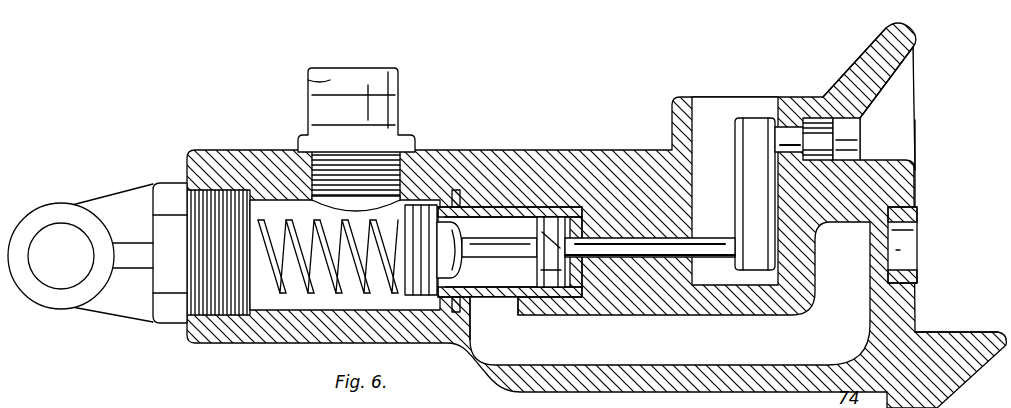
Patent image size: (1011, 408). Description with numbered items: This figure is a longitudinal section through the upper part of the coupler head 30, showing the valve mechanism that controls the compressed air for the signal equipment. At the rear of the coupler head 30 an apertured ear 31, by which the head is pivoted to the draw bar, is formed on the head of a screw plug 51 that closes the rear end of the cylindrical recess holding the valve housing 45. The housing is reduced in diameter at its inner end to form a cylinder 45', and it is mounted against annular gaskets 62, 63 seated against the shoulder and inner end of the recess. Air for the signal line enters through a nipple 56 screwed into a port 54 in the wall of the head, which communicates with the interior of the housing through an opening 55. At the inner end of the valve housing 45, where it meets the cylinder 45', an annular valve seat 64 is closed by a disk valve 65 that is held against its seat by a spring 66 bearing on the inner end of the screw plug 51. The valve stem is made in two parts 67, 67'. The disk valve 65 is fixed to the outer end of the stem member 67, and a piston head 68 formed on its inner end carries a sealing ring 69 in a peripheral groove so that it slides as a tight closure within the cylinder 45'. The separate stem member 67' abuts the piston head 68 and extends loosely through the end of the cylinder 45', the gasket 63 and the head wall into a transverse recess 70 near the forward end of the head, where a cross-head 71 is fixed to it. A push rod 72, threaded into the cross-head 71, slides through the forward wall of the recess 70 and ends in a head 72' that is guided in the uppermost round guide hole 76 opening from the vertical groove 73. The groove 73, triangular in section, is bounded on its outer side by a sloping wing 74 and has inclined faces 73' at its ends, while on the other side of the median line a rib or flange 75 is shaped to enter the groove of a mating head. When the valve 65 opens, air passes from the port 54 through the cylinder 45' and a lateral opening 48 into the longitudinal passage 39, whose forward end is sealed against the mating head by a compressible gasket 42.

The coupler head 30 is at (598, 148).
The apertured ear 31 is at (68, 212).
The longitudinal passage 39 is at (750, 360).
The compressible gasket 42 is at (918, 215).
The valve housing 45 is at (228, 220).
The cylinder 45' is at (510, 207).
The lateral opening 48 is at (493, 292).
The screw plug 51 is at (167, 190).
The port 54 is at (400, 185).
The opening 55 is at (325, 205).
The nipple 56 is at (330, 103).
The gasket 62 is at (456, 190).
The gasket 63 is at (600, 297).
The annular valve seat 64 is at (456, 219).
The disk valve 65 is at (404, 290).
The spring 66 is at (333, 280).
The valve stem member 67 is at (499, 259).
The valve stem member 67' is at (650, 287).
The piston head 68 is at (540, 230).
The sealing ring 69 is at (545, 270).
The transverse recess 70 is at (700, 118).
The cross-head 71 is at (748, 192).
The push rod 72 is at (790, 109).
The head 72' is at (867, 128).
The vertical groove 73 is at (903, 108).
The inclined face 73' is at (935, 163).
The sloping wing 74 is at (868, 62).
The rib or flange 75 is at (966, 338).
The guide hole 76 is at (815, 120).